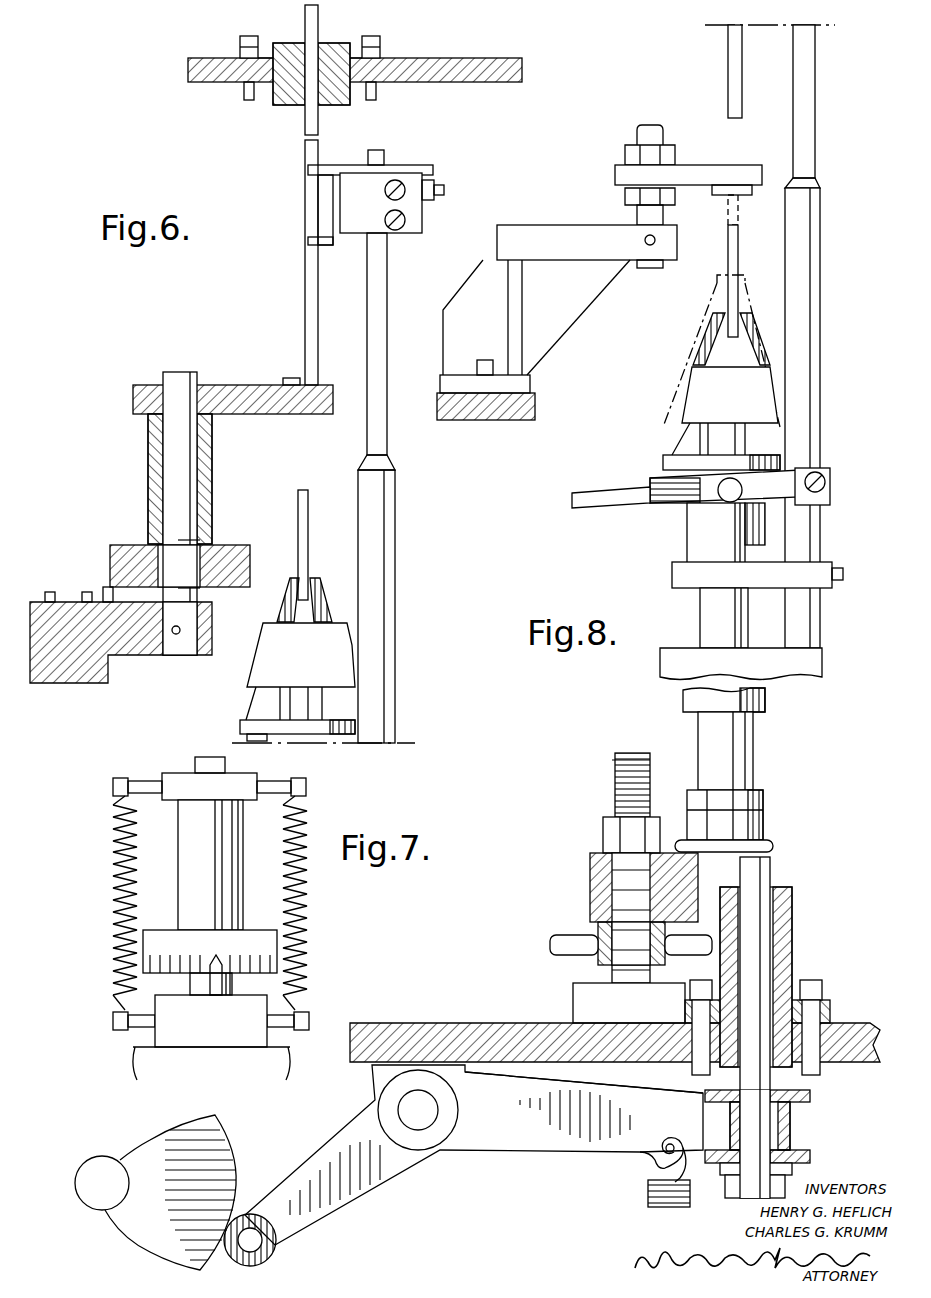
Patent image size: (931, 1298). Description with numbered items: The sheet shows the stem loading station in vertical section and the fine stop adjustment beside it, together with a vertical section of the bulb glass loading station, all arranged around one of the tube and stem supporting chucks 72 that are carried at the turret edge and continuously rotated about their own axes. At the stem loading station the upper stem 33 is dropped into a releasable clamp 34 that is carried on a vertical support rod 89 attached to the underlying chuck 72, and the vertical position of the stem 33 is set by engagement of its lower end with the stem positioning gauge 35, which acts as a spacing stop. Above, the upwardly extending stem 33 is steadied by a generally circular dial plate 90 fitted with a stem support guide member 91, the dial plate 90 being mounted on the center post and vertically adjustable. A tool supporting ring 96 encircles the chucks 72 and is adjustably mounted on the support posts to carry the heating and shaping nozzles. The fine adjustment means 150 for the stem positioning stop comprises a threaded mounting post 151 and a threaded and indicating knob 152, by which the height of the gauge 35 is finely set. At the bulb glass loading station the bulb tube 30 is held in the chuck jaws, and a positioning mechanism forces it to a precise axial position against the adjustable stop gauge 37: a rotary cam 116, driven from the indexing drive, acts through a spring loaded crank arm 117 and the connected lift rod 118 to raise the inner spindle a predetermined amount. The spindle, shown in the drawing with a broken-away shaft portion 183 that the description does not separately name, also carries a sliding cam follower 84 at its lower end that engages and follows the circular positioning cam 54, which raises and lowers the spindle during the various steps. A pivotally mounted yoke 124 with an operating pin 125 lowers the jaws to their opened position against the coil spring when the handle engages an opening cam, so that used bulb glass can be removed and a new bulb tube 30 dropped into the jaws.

In FIG. 6, the bulb tube 30 is at (306, 555).
In FIG. 8, the bulb tube 30 is at (728, 262).
In FIG. 6, the upper stem 33 is at (303, 123).
In FIG. 8, the upper stem 33 is at (711, 71).
In FIG. 6, the clamp 34 is at (340, 166).
In FIG. 6, the stem positioning gauge 35 is at (283, 413).
In FIG. 7, the stem positioning gauge 35 is at (257, 776).
In FIG. 8, the stop gauge 37 is at (748, 168).
In FIG. 8, the circular positioning cam 54 is at (700, 893).
In FIG. 8, the chuck 72 is at (660, 433).
In FIG. 8, the cam follower 84 is at (752, 816).
In FIG. 6, the vertical support rod 89 is at (378, 297).
In FIG. 8, the vertical support rod 89 is at (812, 160).
In FIG. 6, the dial plate 90 is at (438, 62).
In FIG. 6, the stem support guide member 91 is at (332, 45).
In FIG. 6, the tool supporting ring 96 is at (108, 682).
In FIG. 8, the tool supporting ring 96 is at (535, 402).
In FIG. 8, the rotary cam 116 is at (225, 1158).
In FIG. 8, the spring loaded crank arm 117 is at (335, 1138).
In FIG. 8, the lift rod 118 is at (757, 958).
In FIG. 8, the yoke 124 is at (762, 480).
In FIG. 8, the operating pin 125 is at (612, 508).
In FIG. 6, the fine adjustment means 150 is at (215, 470).
In FIG. 7, the fine adjustment means 150 is at (172, 870).
In FIG. 6, the threaded mounting post 151 is at (196, 540).
In FIG. 6, the threaded and indicating knob 152 is at (240, 587).
In FIG. 7, the threaded and indicating knob 152 is at (257, 935).
In FIG. 8, the shaft 183 is at (740, 730).